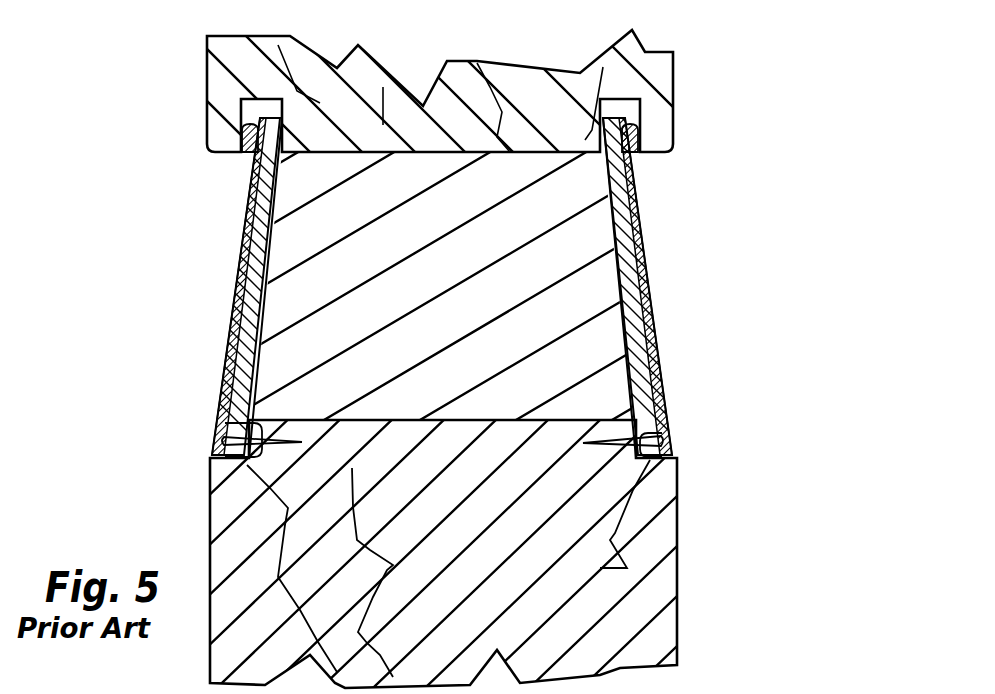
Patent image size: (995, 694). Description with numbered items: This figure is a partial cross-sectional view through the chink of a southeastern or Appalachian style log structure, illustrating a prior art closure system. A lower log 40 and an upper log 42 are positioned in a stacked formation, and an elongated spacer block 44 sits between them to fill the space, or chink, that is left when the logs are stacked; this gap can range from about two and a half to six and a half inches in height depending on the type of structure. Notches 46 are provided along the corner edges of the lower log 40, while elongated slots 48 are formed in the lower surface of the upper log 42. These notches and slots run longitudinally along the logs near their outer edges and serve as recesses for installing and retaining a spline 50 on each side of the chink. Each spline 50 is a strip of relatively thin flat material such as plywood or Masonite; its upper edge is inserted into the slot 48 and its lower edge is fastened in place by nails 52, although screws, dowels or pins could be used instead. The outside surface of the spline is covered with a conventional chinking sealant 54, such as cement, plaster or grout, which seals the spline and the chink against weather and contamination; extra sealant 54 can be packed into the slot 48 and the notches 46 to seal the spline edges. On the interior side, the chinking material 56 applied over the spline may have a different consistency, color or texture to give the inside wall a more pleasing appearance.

The lower log 40 is at (652, 570).
The upper log 42 is at (657, 73).
The spacer block 44 is at (587, 231).
The notches 46 is at (208, 452).
The elongated slots 48 is at (245, 103).
The spline 50 is at (247, 213).
The nails 52 is at (216, 427).
The chinking sealant 54 is at (240, 275).
The chinking material 56 is at (657, 348).